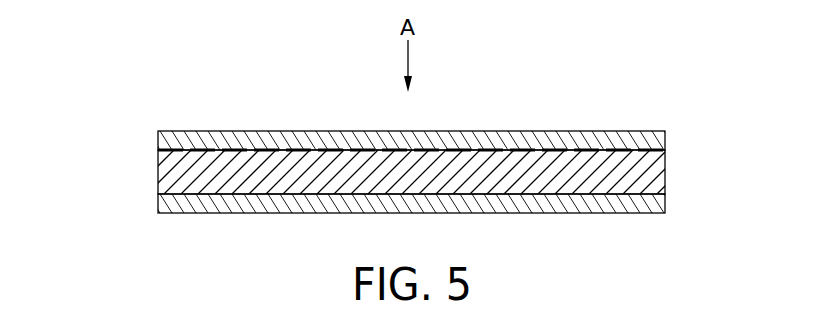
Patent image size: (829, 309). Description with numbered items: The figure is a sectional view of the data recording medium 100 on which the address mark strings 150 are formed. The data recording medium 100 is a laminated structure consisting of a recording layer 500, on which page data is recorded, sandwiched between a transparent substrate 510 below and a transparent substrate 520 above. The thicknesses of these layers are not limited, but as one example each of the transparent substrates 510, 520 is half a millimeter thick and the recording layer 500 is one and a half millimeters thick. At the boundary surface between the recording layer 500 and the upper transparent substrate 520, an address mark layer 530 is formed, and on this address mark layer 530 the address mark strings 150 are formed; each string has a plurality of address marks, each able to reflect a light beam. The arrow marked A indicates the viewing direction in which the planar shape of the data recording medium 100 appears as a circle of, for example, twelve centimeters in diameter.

The data recording medium 100 is at (450, 113).
The address mark strings 150 is at (200, 148).
The recording layer 500 is at (665, 170).
The transparent substrate 510 is at (665, 200).
The transparent substrate 520 is at (665, 135).
The address mark layer 530 is at (148, 144).